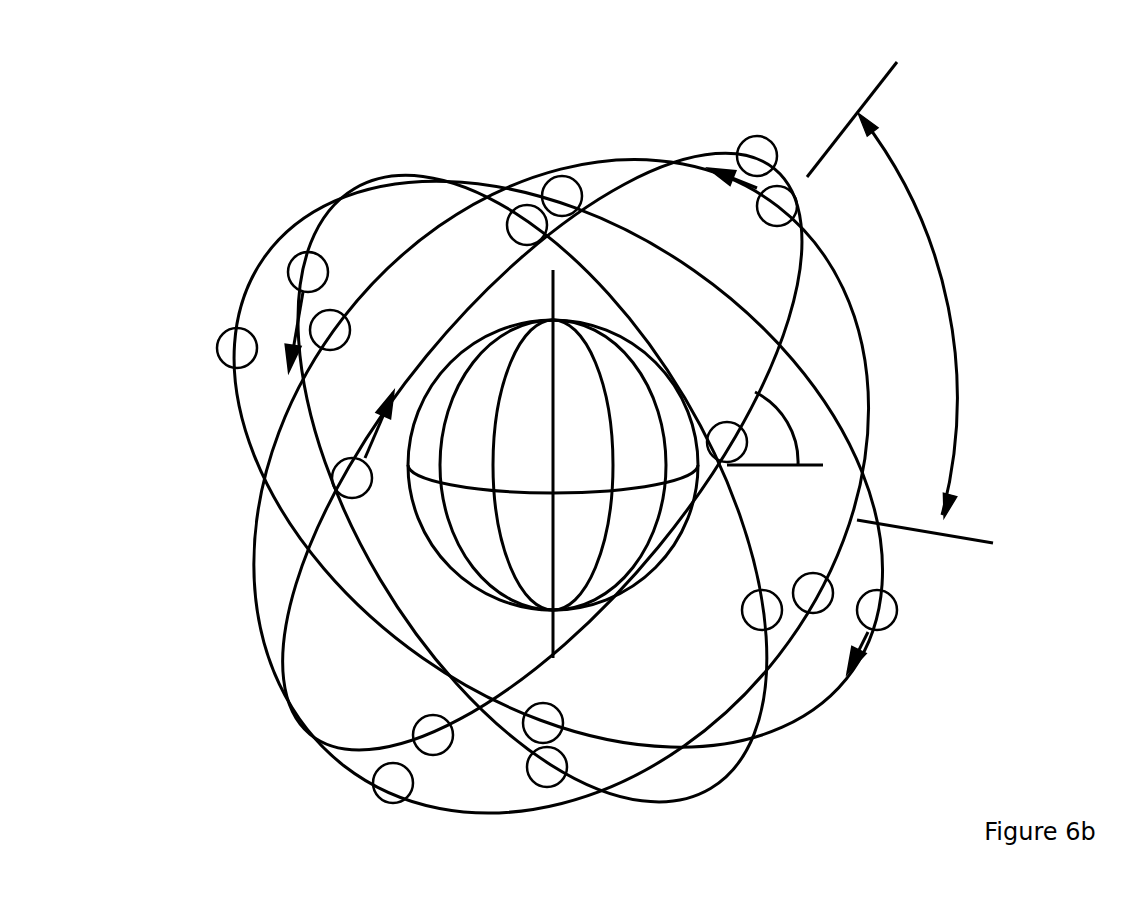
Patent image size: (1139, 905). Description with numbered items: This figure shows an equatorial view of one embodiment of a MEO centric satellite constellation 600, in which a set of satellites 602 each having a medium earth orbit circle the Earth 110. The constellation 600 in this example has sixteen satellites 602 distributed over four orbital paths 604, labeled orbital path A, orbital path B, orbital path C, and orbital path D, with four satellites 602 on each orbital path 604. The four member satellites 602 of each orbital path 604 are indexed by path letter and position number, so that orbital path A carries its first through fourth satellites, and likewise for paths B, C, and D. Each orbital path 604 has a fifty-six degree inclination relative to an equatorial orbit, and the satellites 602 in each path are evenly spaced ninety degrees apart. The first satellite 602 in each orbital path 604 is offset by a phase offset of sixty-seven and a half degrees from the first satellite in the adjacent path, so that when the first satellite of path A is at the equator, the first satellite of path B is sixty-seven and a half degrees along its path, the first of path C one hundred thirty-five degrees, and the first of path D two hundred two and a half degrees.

The MEO centric satellite constellation 600 is at (601, 471).
The satellite 602 is at (940, 625).
The orbital path 604 is at (883, 793).
The Earth 110 is at (553, 464).